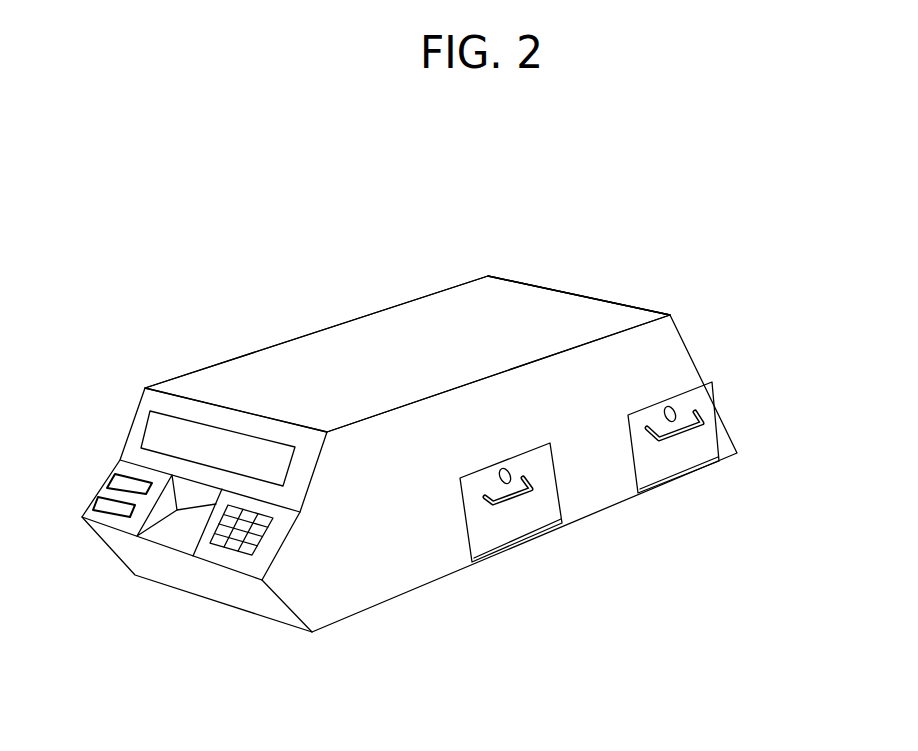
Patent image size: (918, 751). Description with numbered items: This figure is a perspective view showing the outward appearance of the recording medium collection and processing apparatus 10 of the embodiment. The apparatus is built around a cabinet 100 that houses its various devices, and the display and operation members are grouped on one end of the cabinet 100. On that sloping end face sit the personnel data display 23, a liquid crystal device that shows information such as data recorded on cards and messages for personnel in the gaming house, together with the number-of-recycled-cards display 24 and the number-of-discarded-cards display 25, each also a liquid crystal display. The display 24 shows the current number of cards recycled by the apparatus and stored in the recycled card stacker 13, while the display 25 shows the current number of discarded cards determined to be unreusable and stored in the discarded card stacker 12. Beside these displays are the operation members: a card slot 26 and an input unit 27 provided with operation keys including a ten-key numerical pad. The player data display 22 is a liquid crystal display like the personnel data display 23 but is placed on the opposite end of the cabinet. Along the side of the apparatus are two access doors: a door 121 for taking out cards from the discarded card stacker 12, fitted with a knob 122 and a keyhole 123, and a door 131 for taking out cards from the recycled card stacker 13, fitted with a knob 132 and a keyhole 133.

The portable device 10 is at (249, 175).
The cabinet 100 is at (513, 278).
The player data display 22 is at (615, 290).
The personnel data display 23 is at (160, 432).
The number-of-recycled-cards display 24 is at (115, 480).
The number-of-discarded-cards display 25 is at (112, 505).
The card slot 26 is at (175, 508).
The input unit 27 is at (233, 550).
The discarded card stacker 12 is at (522, 520).
The door 121 is at (500, 538).
The knob 122 is at (492, 500).
The keyhole 123 is at (442, 596).
The recycled card stacker 13 is at (675, 465).
The door 131 is at (707, 463).
The knob 132 is at (700, 423).
The keyhole 133 is at (676, 410).